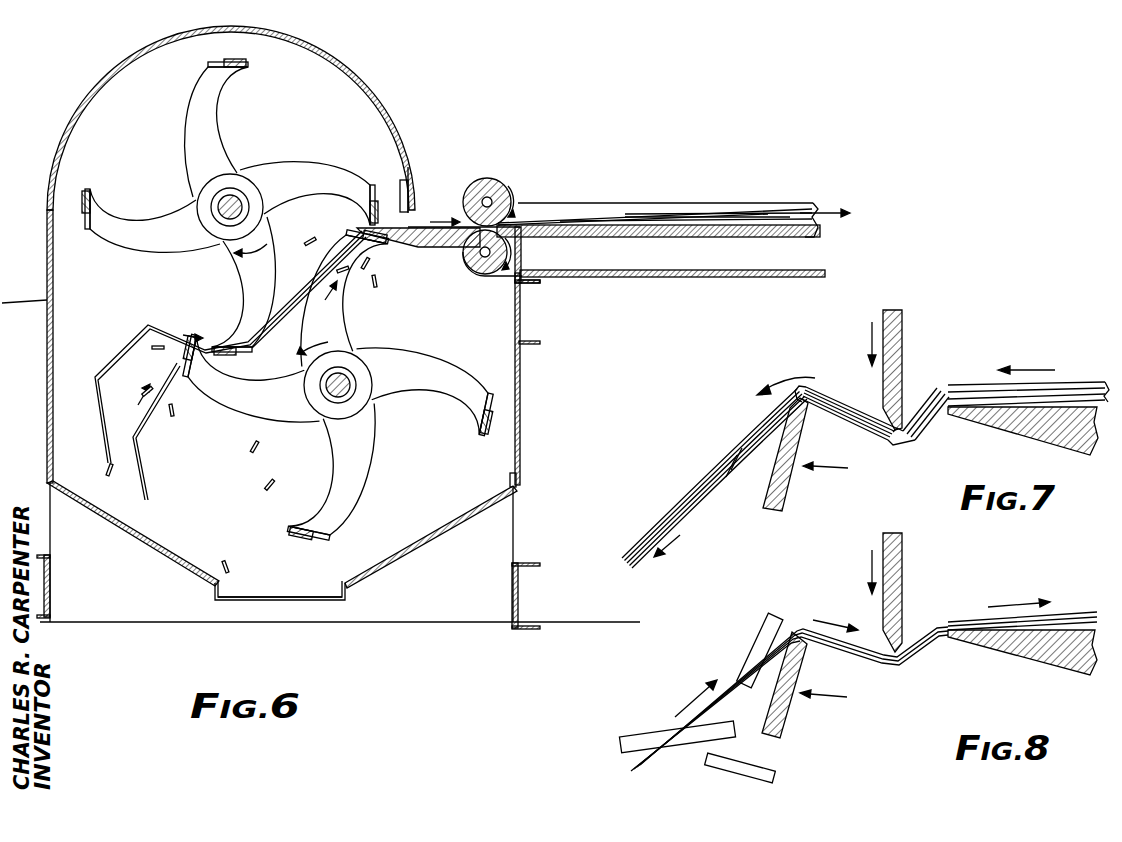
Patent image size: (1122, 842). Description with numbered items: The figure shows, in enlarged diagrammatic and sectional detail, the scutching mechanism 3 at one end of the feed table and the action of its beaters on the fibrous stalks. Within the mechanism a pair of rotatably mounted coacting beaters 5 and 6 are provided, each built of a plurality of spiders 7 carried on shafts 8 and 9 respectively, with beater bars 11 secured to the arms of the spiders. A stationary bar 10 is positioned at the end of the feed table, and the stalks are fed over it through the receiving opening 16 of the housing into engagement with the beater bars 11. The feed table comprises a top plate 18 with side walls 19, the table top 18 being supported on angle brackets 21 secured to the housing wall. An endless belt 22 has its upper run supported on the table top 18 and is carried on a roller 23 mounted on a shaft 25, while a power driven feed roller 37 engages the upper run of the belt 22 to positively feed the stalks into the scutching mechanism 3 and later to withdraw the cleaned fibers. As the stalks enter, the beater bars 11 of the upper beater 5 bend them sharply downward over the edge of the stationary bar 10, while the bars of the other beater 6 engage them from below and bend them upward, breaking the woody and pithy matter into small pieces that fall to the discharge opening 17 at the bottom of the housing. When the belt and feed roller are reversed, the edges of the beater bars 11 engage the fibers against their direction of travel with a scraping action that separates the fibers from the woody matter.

In FIG. 6, the scutching mechanism 3 is at (349, 59).
In FIG. 6, the upper beater 5 is at (249, 274).
In FIG. 6, the lower beater 6 is at (338, 385).
In FIG. 6, the spider 7 is at (249, 274).
In FIG. 6, the shaft 8 is at (242, 172).
In FIG. 6, the shaft 9 is at (369, 394).
In FIG. 6, the stationary bar 10 is at (437, 252).
In FIG. 7, the stationary bar 10 is at (1012, 427).
In FIG. 8, the stationary bar 10 is at (1004, 645).
In FIG. 6, the beater bar 11 is at (246, 68).
In FIG. 7, the beater bar 11 is at (893, 322).
In FIG. 8, the beater bar 11 is at (893, 556).
In FIG. 6, the receiving opening 16 is at (410, 240).
In FIG. 6, the discharge opening 17 is at (320, 600).
In FIG. 6, the top plate 18 is at (662, 238).
In FIG. 6, the side wall 19 is at (612, 186).
In FIG. 6, the angle bracket 21 is at (535, 240).
In FIG. 6, the endless belt 22 is at (608, 228).
In FIG. 6, the roller 23 is at (485, 276).
In FIG. 6, the shaft 25 is at (468, 274).
In FIG. 6, the feed roller 37 is at (488, 196).